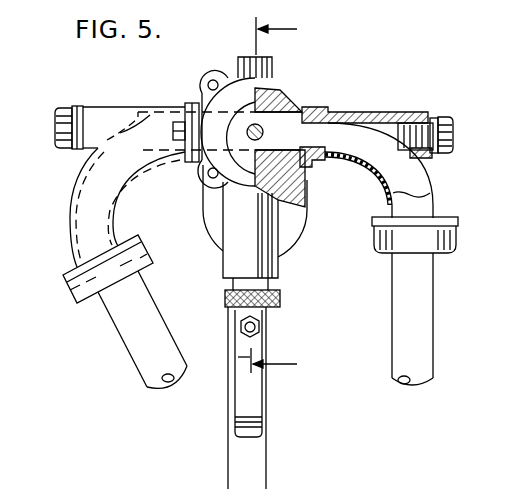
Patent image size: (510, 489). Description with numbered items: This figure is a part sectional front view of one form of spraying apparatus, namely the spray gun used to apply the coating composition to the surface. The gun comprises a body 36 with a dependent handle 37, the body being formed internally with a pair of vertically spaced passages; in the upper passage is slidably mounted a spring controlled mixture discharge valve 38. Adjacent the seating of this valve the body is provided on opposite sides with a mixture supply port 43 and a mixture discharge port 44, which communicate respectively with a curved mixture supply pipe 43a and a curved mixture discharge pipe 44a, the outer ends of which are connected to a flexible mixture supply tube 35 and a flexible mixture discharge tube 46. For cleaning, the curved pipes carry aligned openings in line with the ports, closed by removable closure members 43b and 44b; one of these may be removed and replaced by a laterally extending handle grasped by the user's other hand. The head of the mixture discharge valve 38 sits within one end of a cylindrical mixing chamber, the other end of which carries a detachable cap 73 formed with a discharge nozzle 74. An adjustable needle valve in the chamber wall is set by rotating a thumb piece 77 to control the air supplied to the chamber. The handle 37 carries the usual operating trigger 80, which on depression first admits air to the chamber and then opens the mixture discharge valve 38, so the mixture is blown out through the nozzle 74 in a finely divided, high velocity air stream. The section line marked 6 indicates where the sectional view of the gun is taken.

The section line 6- 6 is at (276, 197).
The flexible mixture supply tube 35 is at (433, 338).
The body 36 is at (270, 90).
The handle 37 is at (238, 457).
The mixture discharge valve 38 is at (264, 133).
The mixture supply port 43 is at (298, 110).
The mixture supply pipe 43a is at (363, 112).
The removable closure member 43b is at (445, 117).
The mixture discharge port 44 is at (197, 88).
The mixture discharge pipe 44a is at (128, 135).
The removable closure member 44b is at (63, 115).
The flexible mixture discharge tube 46 is at (133, 335).
The detachable cap 73 is at (212, 140).
The discharge nozzle 74 is at (253, 137).
The thumb piece 77 is at (281, 299).
The operating trigger 80 is at (260, 415).